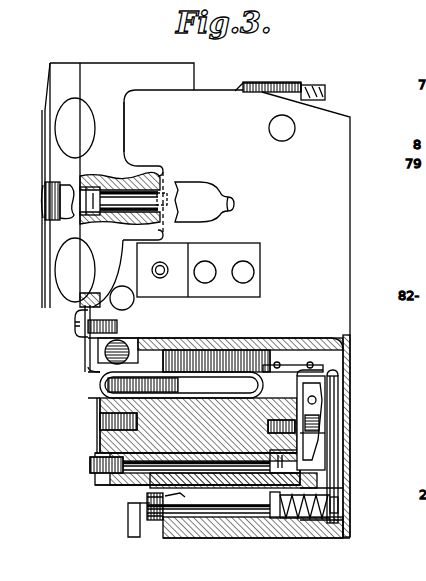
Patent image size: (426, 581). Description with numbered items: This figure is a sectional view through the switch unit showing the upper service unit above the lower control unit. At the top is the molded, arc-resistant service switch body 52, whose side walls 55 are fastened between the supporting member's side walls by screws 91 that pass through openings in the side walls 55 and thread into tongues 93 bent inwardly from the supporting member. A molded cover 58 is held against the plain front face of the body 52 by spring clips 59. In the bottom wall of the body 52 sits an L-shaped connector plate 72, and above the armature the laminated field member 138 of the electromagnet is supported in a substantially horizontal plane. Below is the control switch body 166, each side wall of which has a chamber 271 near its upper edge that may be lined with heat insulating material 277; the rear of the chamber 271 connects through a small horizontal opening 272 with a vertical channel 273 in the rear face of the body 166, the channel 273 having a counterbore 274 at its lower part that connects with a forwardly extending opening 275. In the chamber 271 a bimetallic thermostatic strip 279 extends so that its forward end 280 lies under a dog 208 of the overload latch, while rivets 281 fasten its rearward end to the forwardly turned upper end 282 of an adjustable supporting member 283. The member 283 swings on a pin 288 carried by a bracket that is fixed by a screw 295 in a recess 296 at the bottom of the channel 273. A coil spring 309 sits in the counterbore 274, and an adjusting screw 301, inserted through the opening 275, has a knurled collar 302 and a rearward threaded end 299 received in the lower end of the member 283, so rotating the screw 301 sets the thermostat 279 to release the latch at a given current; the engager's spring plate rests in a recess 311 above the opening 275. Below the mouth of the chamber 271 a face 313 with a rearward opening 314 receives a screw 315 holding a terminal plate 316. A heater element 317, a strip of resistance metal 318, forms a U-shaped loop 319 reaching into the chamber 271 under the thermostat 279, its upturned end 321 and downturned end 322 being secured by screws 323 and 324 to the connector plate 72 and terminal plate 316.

The service switch body 52 is at (107, 70).
The side walls 55 is at (154, 82).
The molded cover 58 is at (61, 81).
The spring clips 59 is at (55, 198).
The connector plate 72 is at (77, 313).
The screws 91 is at (125, 180).
The tongues 93 is at (173, 158).
The field member 138 is at (270, 87).
The control switch body 166 is at (225, 525).
The dogs 208 is at (107, 353).
The chamber 271 is at (275, 372).
The horizontal opening 272 is at (293, 358).
The vertical channels 273 is at (325, 378).
The counterbore 274 is at (317, 538).
The openings 275 is at (260, 520).
The heat insulating material 277 is at (90, 463).
The bimetallic thermostatic strip 279 is at (210, 362).
The forward end 280 is at (150, 378).
The rivets 281 is at (280, 366).
The upper end 282 is at (338, 378).
The adjustable supporting member 283 is at (323, 400).
The pin 288 is at (318, 420).
The screw 295 is at (305, 428).
The recess 296 is at (330, 433).
The threaded end 299 is at (332, 508).
The adjusting screw 301 is at (183, 495).
The collar 302 is at (147, 503).
The coil spring 309 is at (300, 500).
The recess 311 is at (163, 523).
The face 313 is at (130, 480).
The opening 314 is at (100, 478).
The screw 315 is at (148, 462).
The terminal plate 316 is at (110, 397).
The heater element 317 is at (185, 367).
The strip of resistance metal 318 is at (118, 383).
The U-shaped loop 319 is at (242, 360).
The end 321 is at (83, 342).
The end 322 is at (107, 450).
The screw 323 is at (125, 318).
The screw 324 is at (100, 427).